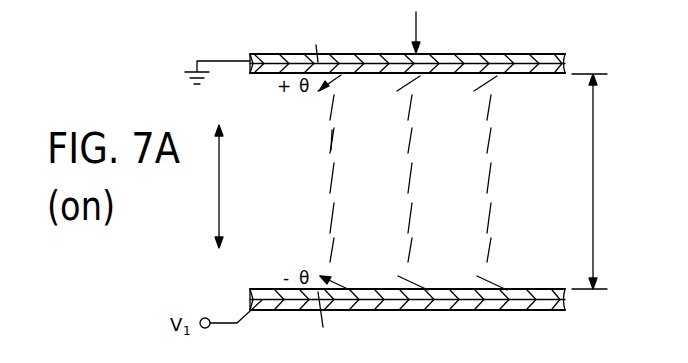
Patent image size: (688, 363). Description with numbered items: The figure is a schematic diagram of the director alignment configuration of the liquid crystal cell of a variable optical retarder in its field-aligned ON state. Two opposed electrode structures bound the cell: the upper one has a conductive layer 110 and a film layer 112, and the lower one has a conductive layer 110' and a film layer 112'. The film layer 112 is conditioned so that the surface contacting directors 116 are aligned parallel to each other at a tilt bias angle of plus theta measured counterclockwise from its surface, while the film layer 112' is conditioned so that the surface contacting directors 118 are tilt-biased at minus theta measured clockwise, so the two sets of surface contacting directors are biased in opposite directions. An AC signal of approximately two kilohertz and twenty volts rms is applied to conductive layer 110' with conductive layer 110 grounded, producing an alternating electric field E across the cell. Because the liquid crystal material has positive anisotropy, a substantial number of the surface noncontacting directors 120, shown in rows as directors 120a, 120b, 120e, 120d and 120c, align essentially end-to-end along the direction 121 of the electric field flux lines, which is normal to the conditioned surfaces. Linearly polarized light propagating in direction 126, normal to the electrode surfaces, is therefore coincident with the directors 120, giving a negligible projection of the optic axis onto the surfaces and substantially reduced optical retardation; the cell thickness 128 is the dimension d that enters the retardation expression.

The conductive layer 110 is at (397, 41).
The film layer 112 is at (249, 82).
The direction of light propagation 126 is at (418, 33).
The surface contacting directors 116 is at (337, 79).
The surface noncontacting directors 120a is at (332, 111).
The surface noncontacting directors 120b is at (332, 141).
The surface noncontacting directors 120e is at (332, 175).
The surface noncontacting directors 120d is at (332, 225).
The surface noncontacting directors 120c is at (332, 259).
The surface noncontacting directors 120 is at (327, 142).
The direction of electric field flux lines 121 is at (220, 210).
The thickness 128 is at (600, 181).
The surface contacting directors 118 is at (339, 284).
The conductive layer 110' is at (376, 300).
The film layer 112' is at (262, 274).